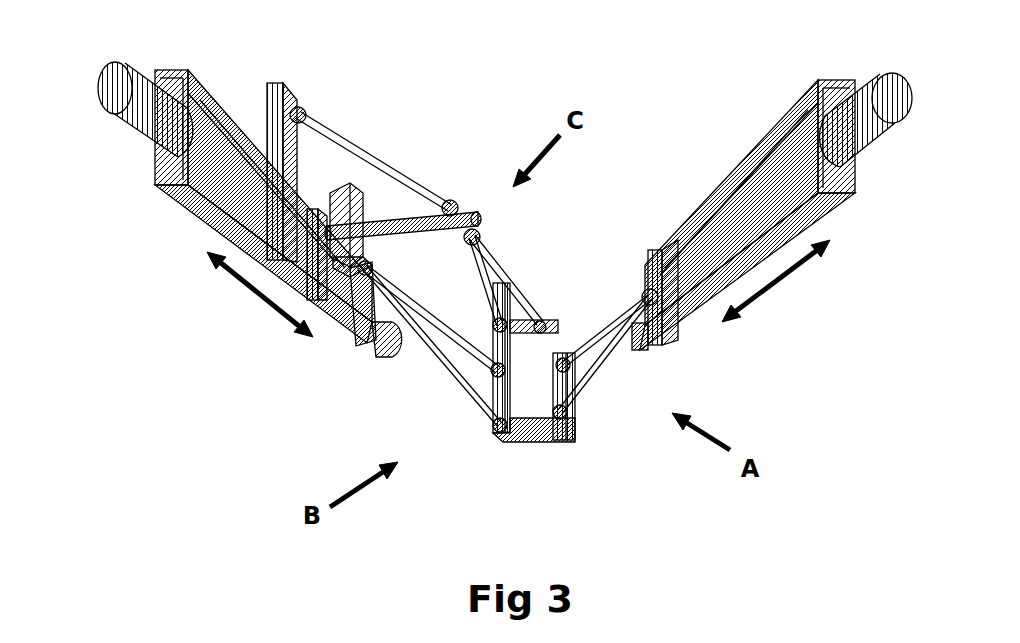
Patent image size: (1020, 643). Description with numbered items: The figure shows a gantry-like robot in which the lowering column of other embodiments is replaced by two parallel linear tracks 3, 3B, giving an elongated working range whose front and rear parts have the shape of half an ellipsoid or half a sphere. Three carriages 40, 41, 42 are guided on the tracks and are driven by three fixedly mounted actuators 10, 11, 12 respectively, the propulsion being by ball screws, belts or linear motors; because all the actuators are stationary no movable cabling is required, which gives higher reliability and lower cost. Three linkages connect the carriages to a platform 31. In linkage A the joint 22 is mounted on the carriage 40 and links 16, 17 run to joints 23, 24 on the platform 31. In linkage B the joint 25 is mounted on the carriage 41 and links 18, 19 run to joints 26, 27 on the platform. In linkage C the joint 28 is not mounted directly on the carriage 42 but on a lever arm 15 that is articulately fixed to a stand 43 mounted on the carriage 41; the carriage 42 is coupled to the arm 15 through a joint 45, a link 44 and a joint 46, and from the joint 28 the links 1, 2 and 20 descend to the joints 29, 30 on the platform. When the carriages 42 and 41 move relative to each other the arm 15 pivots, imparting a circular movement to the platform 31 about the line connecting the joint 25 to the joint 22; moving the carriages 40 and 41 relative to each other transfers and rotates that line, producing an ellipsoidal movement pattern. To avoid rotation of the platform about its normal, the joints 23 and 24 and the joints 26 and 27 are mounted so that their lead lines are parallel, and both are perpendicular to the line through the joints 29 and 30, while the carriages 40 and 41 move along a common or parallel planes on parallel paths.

The link 1 is at (534, 358).
The link 2 is at (494, 262).
The linear track 3 is at (242, 230).
The linear track 3B is at (856, 194).
The actuator 10 is at (870, 130).
The actuator 11 is at (385, 347).
The actuator 12 is at (112, 82).
The arm 15 is at (410, 222).
The link 16 is at (593, 342).
The link 17 is at (605, 355).
The link 18 is at (437, 320).
The link 19 is at (435, 360).
The link 20 is at (487, 258).
The joint 22 is at (647, 290).
The joint 23 is at (570, 377).
The joint 24 is at (567, 420).
The joint 25 is at (372, 266).
The joint 26 is at (493, 373).
The joint 27 is at (495, 430).
The joint 28 is at (480, 232).
The joint 29 is at (494, 322).
The joint 30 is at (543, 318).
The platform 31 is at (530, 427).
The carriage 40 is at (660, 245).
The carriage 41 is at (322, 212).
The carriage 42 is at (275, 140).
The stand 43 is at (348, 190).
The link 44 is at (330, 137).
The joint 45 is at (298, 107).
The joint 46 is at (455, 204).